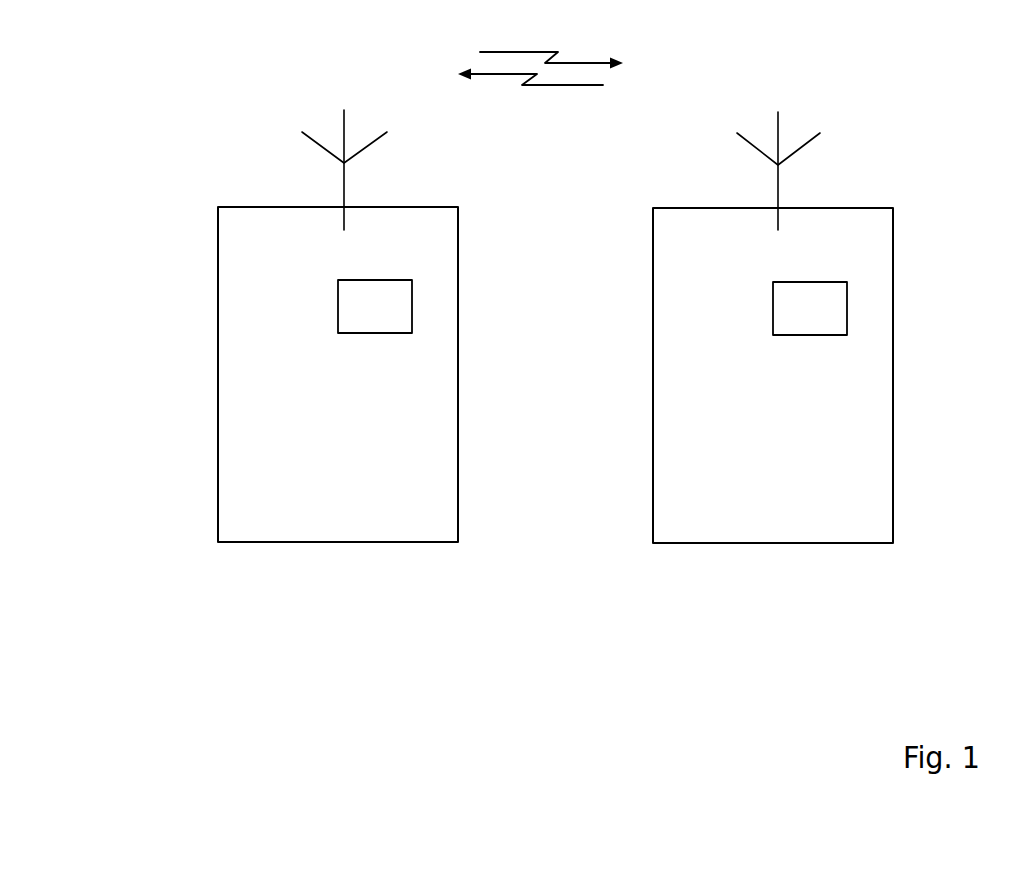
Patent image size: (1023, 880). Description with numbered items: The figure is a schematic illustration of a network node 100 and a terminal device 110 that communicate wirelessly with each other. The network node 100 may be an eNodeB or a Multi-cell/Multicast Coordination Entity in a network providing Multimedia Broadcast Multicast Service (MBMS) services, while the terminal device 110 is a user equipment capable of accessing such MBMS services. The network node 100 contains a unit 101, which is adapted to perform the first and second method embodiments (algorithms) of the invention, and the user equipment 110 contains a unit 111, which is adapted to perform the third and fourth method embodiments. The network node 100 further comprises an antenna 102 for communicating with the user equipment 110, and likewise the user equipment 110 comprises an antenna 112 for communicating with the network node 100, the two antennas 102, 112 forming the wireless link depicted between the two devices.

The network node 100 is at (218, 235).
The unit 101 is at (375, 333).
The antenna 102 is at (345, 190).
The terminal device 110 is at (653, 252).
The unit 111 is at (808, 335).
The antenna 112 is at (778, 192).